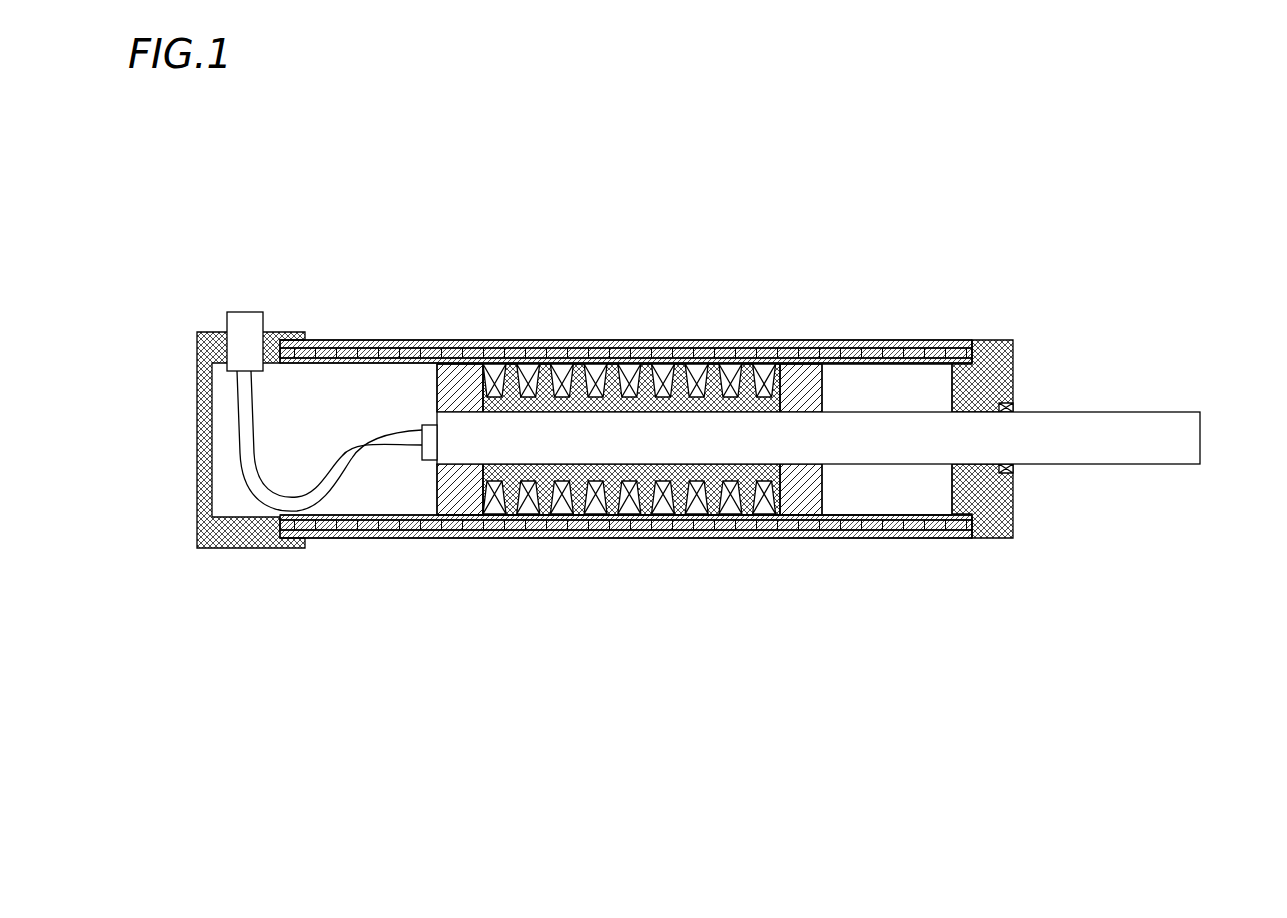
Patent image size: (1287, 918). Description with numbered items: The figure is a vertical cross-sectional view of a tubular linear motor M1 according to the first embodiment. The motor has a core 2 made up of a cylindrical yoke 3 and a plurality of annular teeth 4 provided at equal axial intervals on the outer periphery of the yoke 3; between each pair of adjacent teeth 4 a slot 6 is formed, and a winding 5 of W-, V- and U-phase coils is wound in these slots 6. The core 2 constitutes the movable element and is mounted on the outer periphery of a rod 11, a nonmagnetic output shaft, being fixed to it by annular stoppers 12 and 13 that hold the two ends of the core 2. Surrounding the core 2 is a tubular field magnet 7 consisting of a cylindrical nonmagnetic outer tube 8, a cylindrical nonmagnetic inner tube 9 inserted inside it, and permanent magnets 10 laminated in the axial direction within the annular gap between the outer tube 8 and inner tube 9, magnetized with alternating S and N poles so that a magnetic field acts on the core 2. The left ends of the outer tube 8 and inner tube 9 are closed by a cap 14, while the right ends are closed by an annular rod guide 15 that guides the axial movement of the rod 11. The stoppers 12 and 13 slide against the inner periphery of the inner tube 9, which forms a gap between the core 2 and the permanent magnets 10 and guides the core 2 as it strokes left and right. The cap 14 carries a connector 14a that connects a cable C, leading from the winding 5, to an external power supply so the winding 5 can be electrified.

The tubular linear motor M1 is at (190, 291).
The core 2 is at (626, 445).
The yoke 3 is at (636, 535).
The teeth 4 is at (535, 340).
The winding 5 is at (500, 535).
The slot 6 is at (463, 525).
The field magnet 7 is at (864, 538).
The outer tube 8 is at (842, 340).
The inner tube 9 is at (897, 340).
The permanent magnets 10 is at (420, 340).
The rod 11 is at (1073, 412).
The stopper 12 is at (825, 393).
The stopper 13 is at (437, 380).
The cap 14 is at (228, 547).
The connector 14a is at (262, 312).
The rod guide 15 is at (990, 338).
The cable C is at (262, 465).